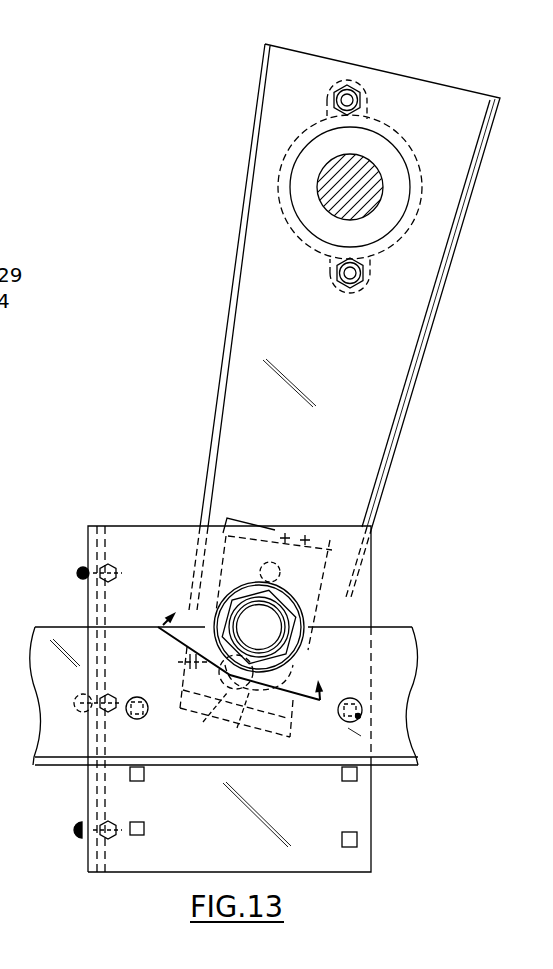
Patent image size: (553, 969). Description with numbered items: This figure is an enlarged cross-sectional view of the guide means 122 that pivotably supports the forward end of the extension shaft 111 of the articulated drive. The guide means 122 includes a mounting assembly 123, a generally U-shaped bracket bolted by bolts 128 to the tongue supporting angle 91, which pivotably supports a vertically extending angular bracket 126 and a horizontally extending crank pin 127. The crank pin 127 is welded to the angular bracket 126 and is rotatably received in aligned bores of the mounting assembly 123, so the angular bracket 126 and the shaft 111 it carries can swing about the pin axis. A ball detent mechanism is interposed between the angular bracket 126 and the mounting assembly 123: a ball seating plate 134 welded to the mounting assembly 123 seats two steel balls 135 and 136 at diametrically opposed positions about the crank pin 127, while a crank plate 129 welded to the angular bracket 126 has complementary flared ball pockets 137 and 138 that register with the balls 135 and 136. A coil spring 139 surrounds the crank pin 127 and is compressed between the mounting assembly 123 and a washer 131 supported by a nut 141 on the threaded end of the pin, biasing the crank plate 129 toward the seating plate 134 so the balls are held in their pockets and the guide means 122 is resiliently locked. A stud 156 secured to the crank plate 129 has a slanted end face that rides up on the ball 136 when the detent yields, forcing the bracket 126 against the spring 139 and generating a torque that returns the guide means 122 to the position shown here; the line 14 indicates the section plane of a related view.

The section line 14- 14 is at (251, 649).
The tongue supporting angle 91 is at (408, 656).
The extension shaft 111 is at (368, 182).
The guide means 122 is at (445, 325).
The mounting assembly 123 is at (80, 545).
The vertically extending angular bracket 126 is at (408, 388).
The crank pin 127 is at (273, 637).
The bolt 128 is at (137, 719).
The crank plate 129 is at (226, 540).
The washer 131 is at (301, 655).
The ball seating plate 134 is at (285, 535).
The steel ball 135 is at (305, 540).
The steel ball 136 is at (203, 722).
The ball pocket 137 is at (266, 562).
The ball pocket 138 is at (245, 717).
The coil spring 139 is at (300, 604).
The nut 141 is at (291, 622).
The stud 156 is at (178, 662).